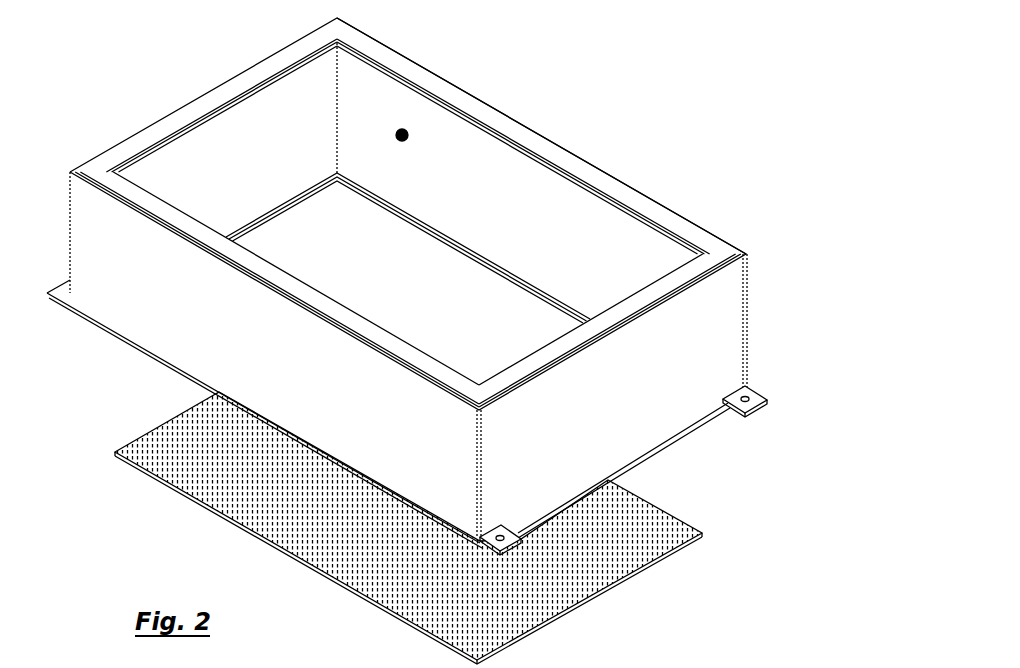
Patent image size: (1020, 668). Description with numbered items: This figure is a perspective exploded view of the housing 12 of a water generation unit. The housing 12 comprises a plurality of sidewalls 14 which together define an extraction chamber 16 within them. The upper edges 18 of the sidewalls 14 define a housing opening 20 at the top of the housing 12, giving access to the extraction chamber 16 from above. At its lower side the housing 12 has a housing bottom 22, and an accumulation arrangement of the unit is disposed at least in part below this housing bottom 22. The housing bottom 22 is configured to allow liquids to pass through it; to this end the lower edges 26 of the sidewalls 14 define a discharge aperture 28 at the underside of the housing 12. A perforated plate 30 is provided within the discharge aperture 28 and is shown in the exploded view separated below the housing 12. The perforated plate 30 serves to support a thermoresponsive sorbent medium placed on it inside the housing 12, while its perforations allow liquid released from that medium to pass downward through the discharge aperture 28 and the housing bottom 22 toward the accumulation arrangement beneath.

The housing 12 is at (730, 83).
The sidewalls 14 is at (263, 116).
The extraction chamber 16 is at (398, 132).
The upper edges 18 is at (173, 125).
The housing opening 20 is at (498, 113).
The housing bottom 22 is at (158, 362).
The lower edges 26 is at (308, 200).
The discharge aperture 28 is at (428, 240).
The perforated plate 30 is at (240, 511).